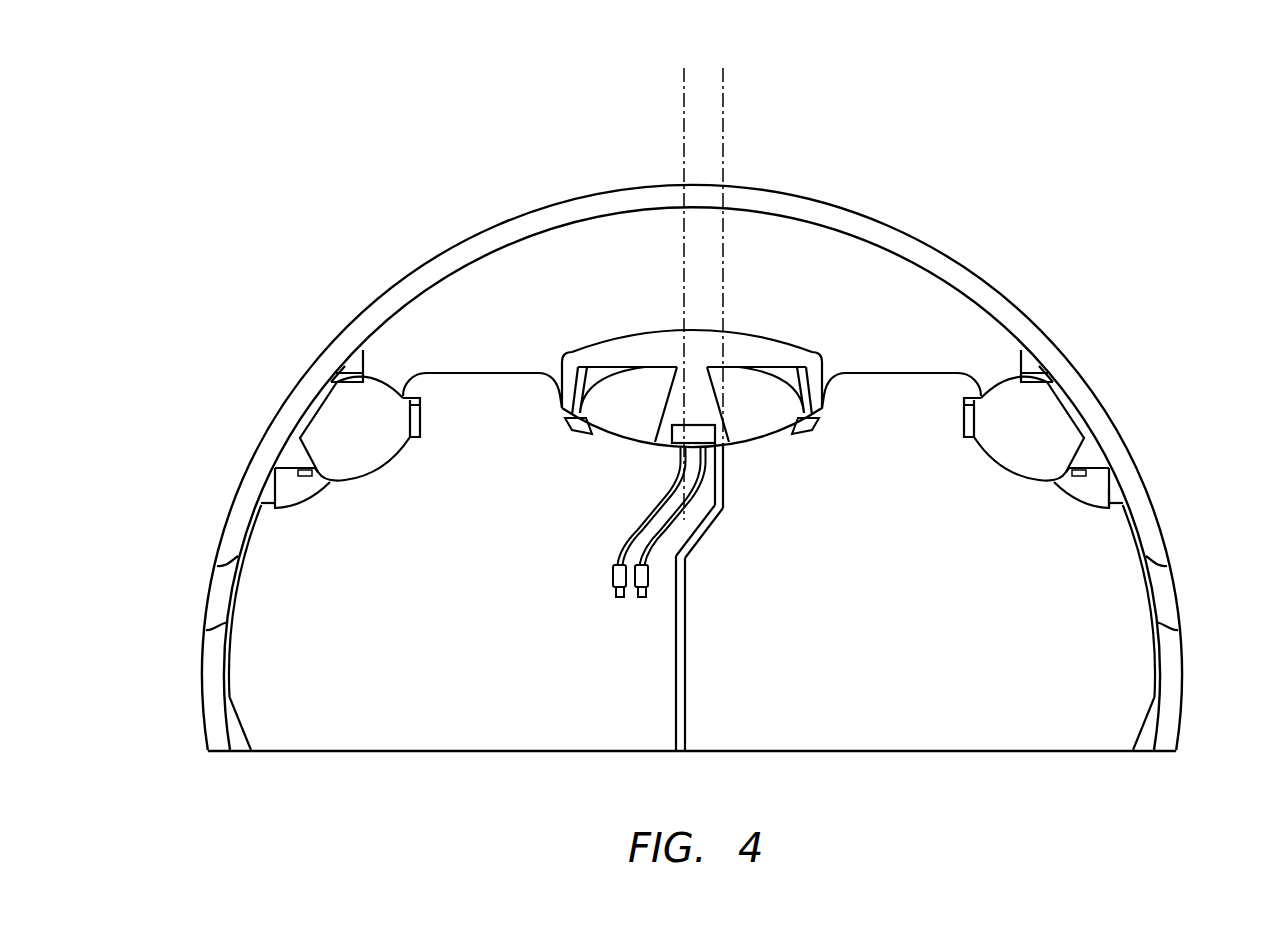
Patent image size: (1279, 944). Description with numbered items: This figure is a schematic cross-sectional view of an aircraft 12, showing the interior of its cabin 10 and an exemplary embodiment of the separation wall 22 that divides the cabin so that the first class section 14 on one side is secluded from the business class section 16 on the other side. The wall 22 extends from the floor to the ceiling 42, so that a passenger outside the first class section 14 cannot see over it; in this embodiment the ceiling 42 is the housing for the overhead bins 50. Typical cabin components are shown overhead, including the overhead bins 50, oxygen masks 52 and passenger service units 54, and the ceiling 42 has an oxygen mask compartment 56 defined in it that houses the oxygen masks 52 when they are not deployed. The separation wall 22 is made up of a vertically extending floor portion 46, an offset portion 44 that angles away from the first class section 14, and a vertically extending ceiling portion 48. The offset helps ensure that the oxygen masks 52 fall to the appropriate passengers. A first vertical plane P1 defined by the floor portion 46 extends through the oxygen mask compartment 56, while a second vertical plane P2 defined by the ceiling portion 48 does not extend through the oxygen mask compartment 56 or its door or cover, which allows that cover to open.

The cabin 10 is at (1102, 306).
The aircraft 12 is at (1080, 590).
The first class section 14 is at (422, 618).
The business class section 16 is at (909, 618).
The separation wall 22 is at (685, 657).
The ceiling 42 is at (659, 447).
The offset portion 44 is at (707, 533).
The floor portion 46 is at (676, 677).
The ceiling portion 48 is at (723, 475).
The overhead bins 50 is at (633, 402).
The oxygen masks 52 is at (620, 603).
The passenger service units 54 is at (700, 435).
The oxygen mask compartment 56 is at (1090, 492).
The first vertical plane P1 is at (684, 102).
The second vertical plane P2 is at (723, 120).